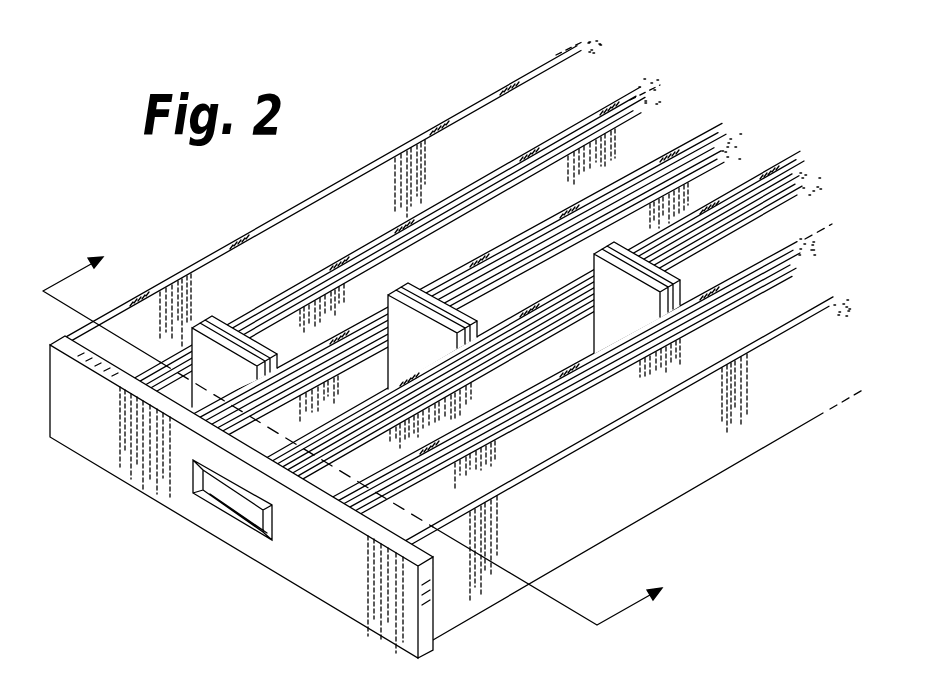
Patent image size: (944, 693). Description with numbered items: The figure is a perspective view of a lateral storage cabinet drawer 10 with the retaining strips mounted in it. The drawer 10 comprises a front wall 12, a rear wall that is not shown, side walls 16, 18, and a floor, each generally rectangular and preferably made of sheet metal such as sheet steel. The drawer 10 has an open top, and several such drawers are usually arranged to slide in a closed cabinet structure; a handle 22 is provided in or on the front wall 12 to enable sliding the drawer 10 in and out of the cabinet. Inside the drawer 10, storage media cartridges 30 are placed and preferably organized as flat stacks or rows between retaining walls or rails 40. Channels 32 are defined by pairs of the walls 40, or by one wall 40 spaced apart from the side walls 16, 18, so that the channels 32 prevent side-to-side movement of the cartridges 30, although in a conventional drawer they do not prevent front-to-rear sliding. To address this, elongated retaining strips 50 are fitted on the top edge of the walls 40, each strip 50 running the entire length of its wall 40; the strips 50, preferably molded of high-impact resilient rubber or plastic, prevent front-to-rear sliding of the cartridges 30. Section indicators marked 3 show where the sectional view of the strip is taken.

The lateral storage cabinet drawer 10 is at (286, 209).
The front wall 12 is at (133, 463).
The side wall 16 is at (368, 195).
The side wall 18 is at (735, 462).
The handle 22 is at (234, 514).
The storage media cartridge 30 is at (200, 322).
The channel 32 is at (528, 116).
The retaining wall 40 is at (542, 220).
The retaining strip 50 is at (467, 197).
The section line 3- 3 is at (365, 426).